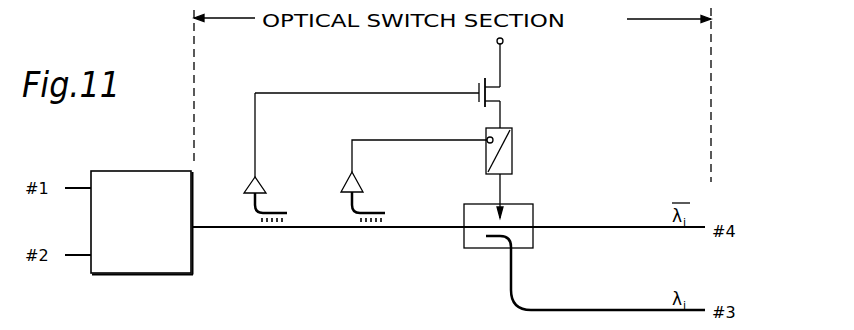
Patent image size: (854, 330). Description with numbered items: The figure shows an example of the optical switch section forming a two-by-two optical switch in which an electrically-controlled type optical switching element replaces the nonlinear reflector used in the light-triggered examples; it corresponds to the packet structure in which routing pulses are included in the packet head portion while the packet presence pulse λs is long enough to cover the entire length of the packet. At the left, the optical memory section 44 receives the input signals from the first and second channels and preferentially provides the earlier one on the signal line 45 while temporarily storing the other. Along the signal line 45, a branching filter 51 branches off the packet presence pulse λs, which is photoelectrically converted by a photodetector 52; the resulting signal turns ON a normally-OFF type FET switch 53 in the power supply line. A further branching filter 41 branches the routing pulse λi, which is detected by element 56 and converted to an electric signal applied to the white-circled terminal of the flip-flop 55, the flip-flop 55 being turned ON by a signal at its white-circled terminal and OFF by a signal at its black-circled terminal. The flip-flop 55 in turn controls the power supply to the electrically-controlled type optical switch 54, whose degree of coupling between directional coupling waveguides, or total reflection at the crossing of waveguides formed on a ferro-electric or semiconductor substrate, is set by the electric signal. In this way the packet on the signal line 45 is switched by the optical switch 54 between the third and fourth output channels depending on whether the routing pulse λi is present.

The optical memory section 44 is at (149, 170).
The signal line 45 is at (220, 236).
The branching filter 51 is at (274, 236).
The branching filter 41 is at (370, 236).
The photodetector 52 is at (264, 183).
The light source for idler wavelength 56 is at (370, 183).
The FET switch 53 is at (478, 90).
The flip-flop 55 is at (513, 147).
The electrically-controlled type optical switch 54 is at (531, 203).